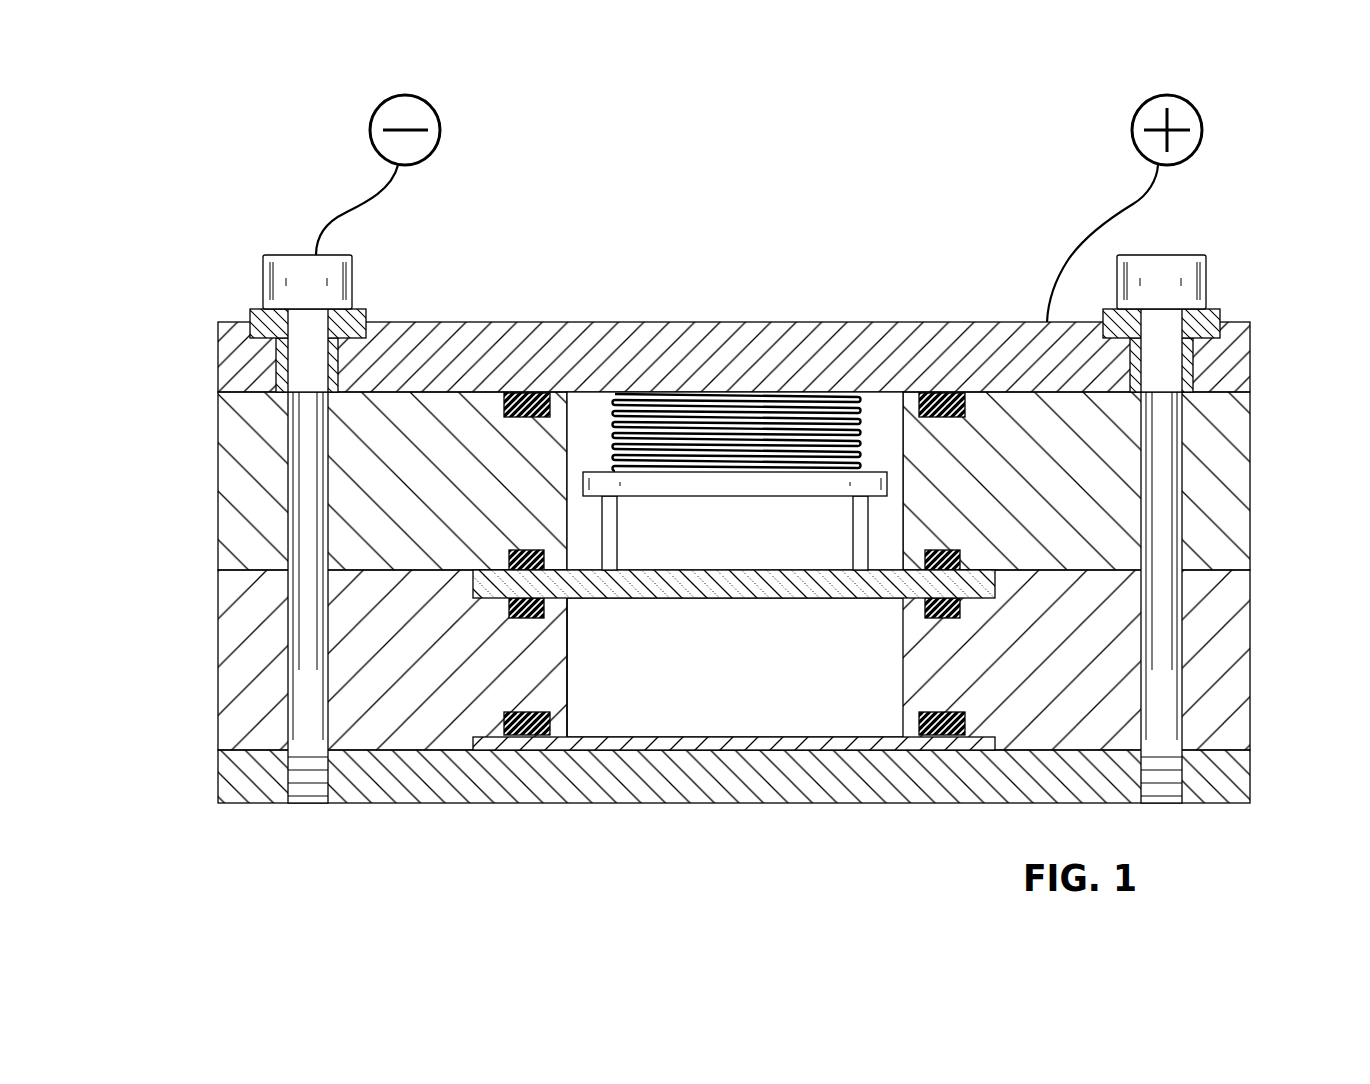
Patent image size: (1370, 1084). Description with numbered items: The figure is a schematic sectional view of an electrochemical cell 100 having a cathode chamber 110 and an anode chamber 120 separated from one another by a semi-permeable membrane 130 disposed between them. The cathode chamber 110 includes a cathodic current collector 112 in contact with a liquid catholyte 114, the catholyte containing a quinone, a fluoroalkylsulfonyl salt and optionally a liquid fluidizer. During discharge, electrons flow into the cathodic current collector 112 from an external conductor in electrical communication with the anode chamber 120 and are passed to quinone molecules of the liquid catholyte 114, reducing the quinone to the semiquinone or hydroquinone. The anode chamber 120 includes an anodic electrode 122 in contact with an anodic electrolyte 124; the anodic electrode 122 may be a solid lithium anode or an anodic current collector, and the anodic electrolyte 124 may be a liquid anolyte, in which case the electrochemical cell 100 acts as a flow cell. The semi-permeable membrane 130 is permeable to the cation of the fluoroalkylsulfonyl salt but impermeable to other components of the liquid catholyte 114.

The electrochemical cell 100 is at (241, 189).
The cathode chamber 110 is at (883, 464).
The cathodic current collector 112 is at (887, 483).
The liquid catholyte 114 is at (638, 532).
The anode chamber 120 is at (566, 660).
The anodic electrode 122 is at (777, 743).
The anodic electrolyte 124 is at (843, 707).
The semi-permeable membrane 130 is at (995, 583).